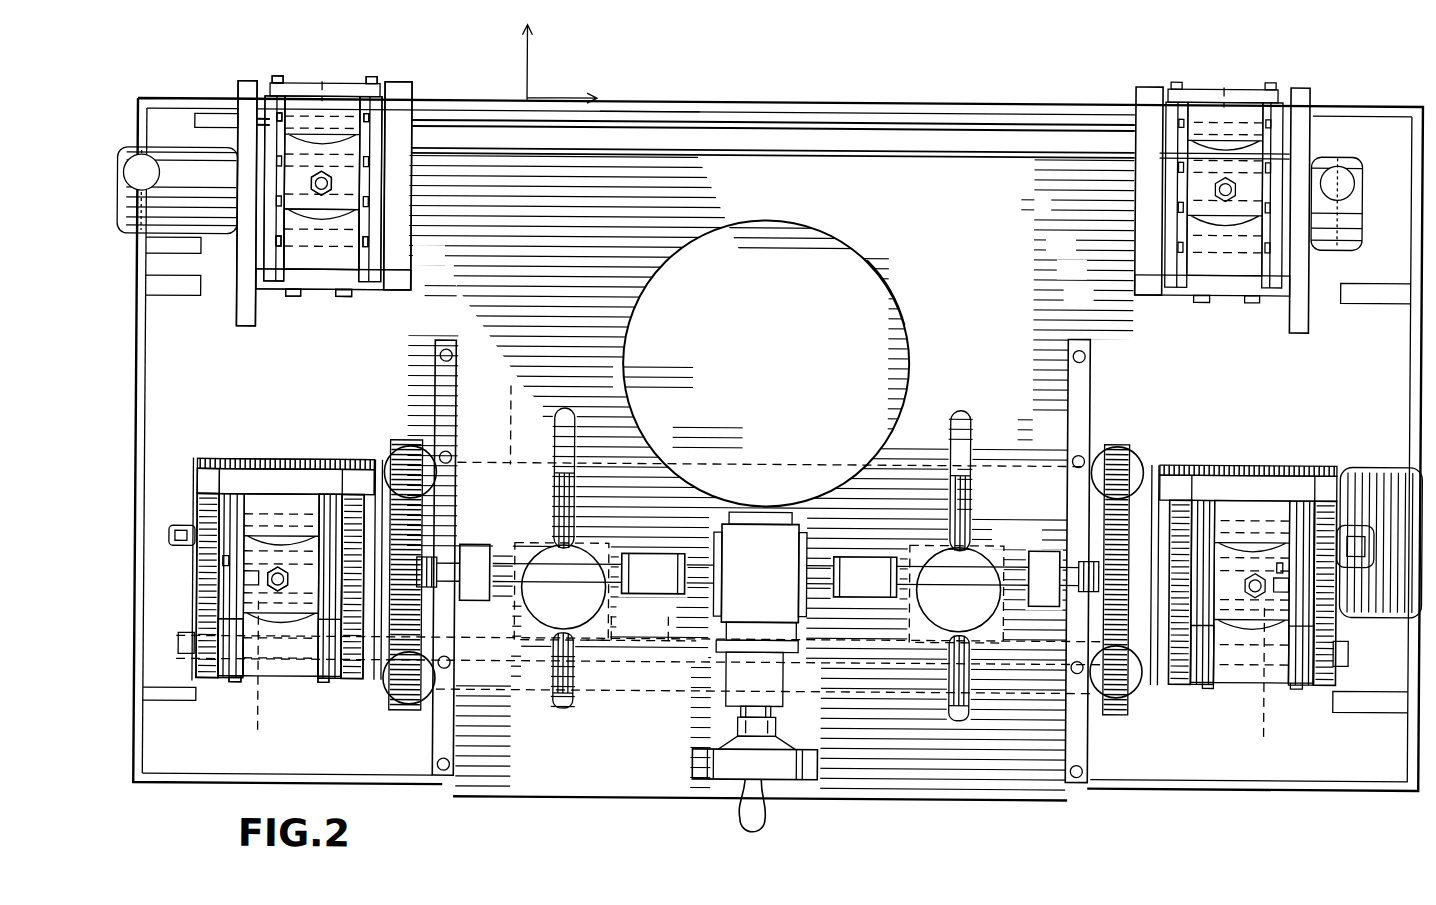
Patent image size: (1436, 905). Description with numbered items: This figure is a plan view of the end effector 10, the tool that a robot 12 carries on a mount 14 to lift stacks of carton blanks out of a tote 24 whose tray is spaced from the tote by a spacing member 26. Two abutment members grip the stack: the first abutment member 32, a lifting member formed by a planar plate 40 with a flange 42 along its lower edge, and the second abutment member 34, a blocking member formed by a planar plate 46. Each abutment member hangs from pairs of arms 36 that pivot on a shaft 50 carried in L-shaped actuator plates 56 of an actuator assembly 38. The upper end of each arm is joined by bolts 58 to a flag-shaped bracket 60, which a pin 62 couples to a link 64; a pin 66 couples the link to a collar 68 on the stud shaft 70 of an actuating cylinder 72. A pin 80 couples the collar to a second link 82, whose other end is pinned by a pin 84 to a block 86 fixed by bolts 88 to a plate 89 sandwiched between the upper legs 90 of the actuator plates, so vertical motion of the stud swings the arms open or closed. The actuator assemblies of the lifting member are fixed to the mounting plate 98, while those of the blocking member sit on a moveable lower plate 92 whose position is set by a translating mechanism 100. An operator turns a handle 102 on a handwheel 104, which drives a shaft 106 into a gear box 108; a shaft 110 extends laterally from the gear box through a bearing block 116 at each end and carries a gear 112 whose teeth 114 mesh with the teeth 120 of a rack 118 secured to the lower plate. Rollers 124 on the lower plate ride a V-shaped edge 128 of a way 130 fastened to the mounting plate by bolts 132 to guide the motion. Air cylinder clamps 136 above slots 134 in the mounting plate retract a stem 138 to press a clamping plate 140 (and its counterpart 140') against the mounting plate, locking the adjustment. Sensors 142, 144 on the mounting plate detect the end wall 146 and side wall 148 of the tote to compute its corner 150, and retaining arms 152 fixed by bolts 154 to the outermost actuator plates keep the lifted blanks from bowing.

The end effector 10 is at (438, 839).
The robot 12 is at (865, 283).
The mount 14 is at (889, 283).
The tote 24 is at (217, 792).
The spacing member 26 is at (1385, 712).
The first abutment member 32 is at (865, 97).
The second abutment member 34 is at (660, 690).
The arms 36 is at (1340, 650).
The actuator assemblies 38 is at (1264, 706).
The planar plate 40 is at (770, 120).
The flange 42 is at (968, 148).
The planar plate 46 is at (675, 665).
The shaft 50 is at (1175, 675).
The L-shaped actuator plates 56 is at (1330, 475).
The bolts 58 is at (1185, 690).
The flag-shaped bracket 60 is at (1213, 680).
The pin 62 is at (798, 425).
The link 64 is at (1340, 636).
The pin 66 is at (1160, 178).
The collar 68 is at (1165, 182).
The stud shaft 70 is at (1252, 565).
The actuating cylinder 72 is at (1295, 470).
The pin 80 is at (1170, 200).
The second link 82 is at (1175, 240).
The pin 84 is at (1235, 300).
The block 86 is at (1165, 300).
The bolts 88 is at (1210, 290).
The plate 89 is at (1292, 300).
The upper legs 90 is at (1350, 460).
The moveable lower plate 92 is at (772, 426).
The mounting plate 98 is at (490, 393).
The translating mechanism 100 is at (662, 795).
The handle 102 is at (745, 825).
The handwheel 104 is at (795, 780).
The shaft 106 is at (745, 710).
The gear box 108 is at (752, 582).
The shaft 110 is at (810, 585).
The gear 112 is at (1085, 556).
The teeth 114 is at (758, 536).
The bearing block 116 is at (1045, 550).
The rack 118 is at (1120, 445).
The teeth 120 is at (1125, 450).
The rollers 124 is at (1120, 695).
The V-shaped edge 128 is at (1072, 770).
The way 130 is at (1100, 790).
The bolts 132 is at (1080, 790).
The slots 134 is at (968, 408).
The air cylinder clamps 136 is at (972, 545).
The stem 138 is at (1010, 590).
The clamping plate 140 is at (640, 667).
The drive box 140' is at (865, 577).
The sensor 142 is at (1357, 175).
The sensor 144 is at (160, 188).
The end wall 146 is at (650, 105).
The side wall 148 is at (150, 340).
The corner 150 is at (140, 135).
The retaining arms 152 is at (1375, 520).
The bolts 154 is at (1372, 540).